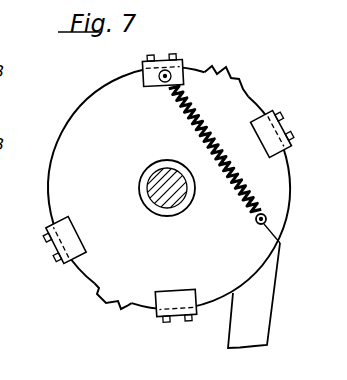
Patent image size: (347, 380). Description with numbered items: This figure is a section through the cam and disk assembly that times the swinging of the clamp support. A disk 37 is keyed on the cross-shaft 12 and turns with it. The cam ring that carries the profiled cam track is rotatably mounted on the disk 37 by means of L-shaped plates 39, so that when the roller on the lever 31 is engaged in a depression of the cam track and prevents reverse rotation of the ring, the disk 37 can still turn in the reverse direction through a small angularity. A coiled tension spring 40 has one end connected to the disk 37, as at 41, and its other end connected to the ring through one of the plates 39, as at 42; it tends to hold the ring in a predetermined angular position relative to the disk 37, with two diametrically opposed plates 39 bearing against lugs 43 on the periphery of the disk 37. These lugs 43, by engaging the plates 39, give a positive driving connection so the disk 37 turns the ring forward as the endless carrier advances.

The cross-shaft 12 is at (165, 207).
The lever 31 is at (268, 315).
The disk 37 is at (278, 203).
The L-shaped plates 39 is at (143, 63).
The coiled tension spring 40 is at (235, 198).
The spring connection to disk 41 is at (286, 243).
The spring connection to plate 42 is at (146, 81).
The lugs 43 is at (231, 74).